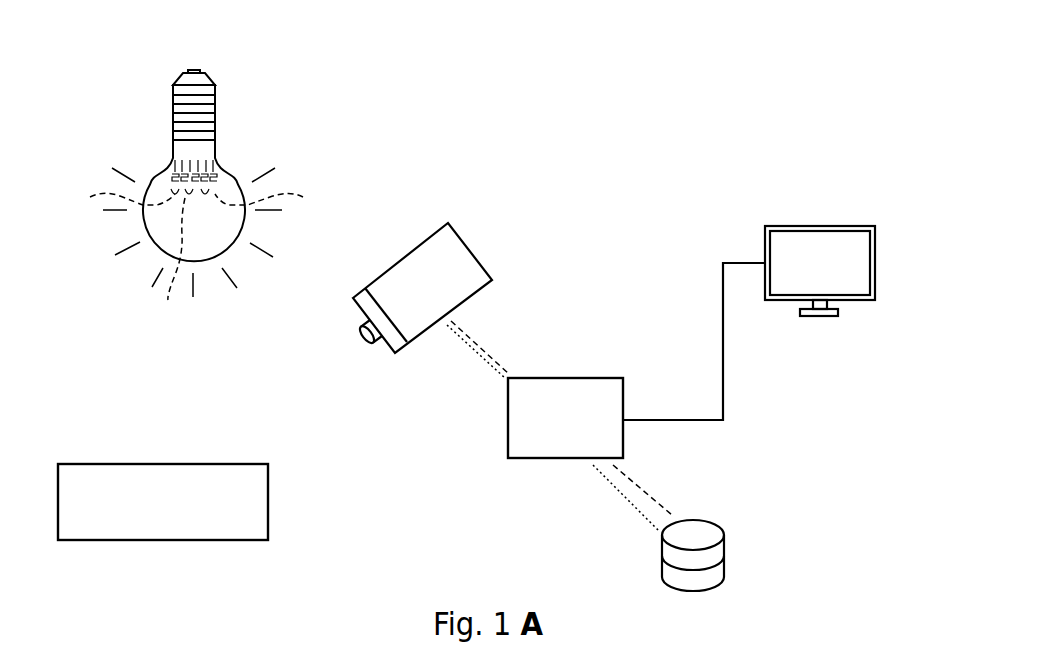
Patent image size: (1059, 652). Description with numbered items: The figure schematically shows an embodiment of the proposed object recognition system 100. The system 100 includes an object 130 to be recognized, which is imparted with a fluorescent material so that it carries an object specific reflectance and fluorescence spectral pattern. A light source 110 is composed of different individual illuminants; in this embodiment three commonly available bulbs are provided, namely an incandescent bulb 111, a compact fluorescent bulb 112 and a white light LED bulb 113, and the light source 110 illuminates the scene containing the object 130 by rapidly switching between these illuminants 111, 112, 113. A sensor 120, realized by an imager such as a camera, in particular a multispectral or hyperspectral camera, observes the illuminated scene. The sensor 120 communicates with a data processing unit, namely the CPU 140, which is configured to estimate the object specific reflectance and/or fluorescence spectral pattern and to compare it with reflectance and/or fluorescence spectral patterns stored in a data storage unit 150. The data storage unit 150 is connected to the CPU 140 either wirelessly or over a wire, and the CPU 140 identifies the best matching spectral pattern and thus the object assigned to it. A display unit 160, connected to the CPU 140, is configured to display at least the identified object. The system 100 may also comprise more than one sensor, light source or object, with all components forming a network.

The system 100 is at (702, 150).
The light source 110 is at (224, 112).
The incandescent bulb 111 is at (113, 197).
The compact fluorescent bulb 112 is at (278, 197).
The white light LED bulb 113 is at (166, 262).
The sensor 120 is at (452, 258).
The object 130 is at (177, 513).
The CPU 140 is at (582, 430).
The data storage unit 150 is at (703, 530).
The display unit 160 is at (818, 247).